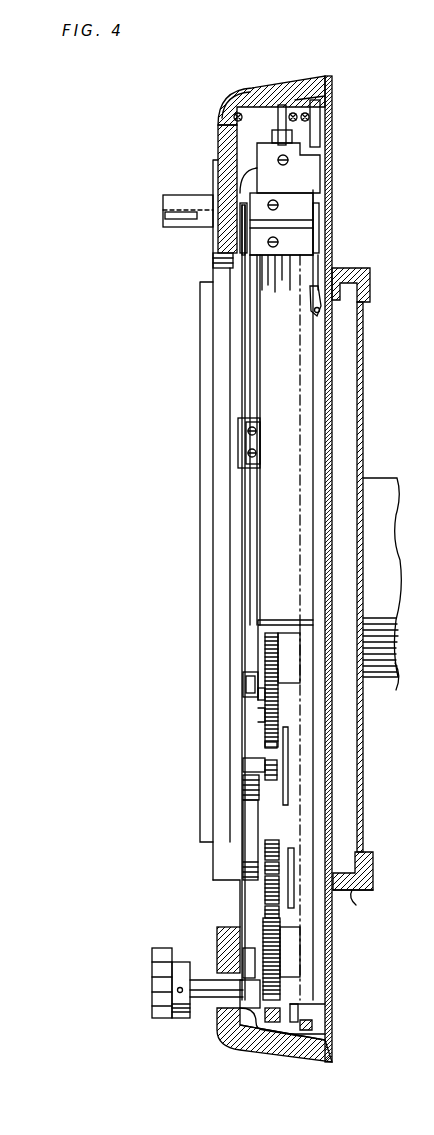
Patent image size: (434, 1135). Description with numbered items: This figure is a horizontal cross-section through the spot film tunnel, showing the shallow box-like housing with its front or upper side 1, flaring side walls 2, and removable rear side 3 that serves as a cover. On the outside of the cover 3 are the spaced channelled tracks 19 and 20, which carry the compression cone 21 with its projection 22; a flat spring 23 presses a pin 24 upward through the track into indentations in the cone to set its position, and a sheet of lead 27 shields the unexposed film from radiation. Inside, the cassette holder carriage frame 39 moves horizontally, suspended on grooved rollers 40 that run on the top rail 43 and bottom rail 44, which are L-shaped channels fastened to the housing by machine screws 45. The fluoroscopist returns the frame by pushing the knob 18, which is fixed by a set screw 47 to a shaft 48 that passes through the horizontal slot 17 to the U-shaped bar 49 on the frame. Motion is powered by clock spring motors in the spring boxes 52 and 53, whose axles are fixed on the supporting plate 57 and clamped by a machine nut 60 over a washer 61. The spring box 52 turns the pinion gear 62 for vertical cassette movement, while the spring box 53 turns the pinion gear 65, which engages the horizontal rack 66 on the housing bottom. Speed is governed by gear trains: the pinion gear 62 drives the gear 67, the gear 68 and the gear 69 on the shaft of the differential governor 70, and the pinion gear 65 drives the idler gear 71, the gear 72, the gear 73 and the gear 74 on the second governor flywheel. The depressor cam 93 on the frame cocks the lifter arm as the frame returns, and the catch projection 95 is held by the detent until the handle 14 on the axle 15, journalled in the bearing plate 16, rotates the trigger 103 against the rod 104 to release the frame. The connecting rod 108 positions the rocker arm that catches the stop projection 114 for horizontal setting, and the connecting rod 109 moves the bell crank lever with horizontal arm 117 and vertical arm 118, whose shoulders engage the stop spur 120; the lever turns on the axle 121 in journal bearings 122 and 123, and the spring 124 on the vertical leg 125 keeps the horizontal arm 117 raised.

The front or upper side 1 is at (222, 130).
The side walls 2 is at (273, 90).
The rear side 3 is at (333, 145).
The handle 14 is at (180, 195).
The rotatable axle 15 is at (175, 220).
The bearing plate 16 is at (216, 232).
The horizontal slot 17 is at (222, 1005).
The knob 18 is at (160, 997).
The channelled track 19 is at (358, 280).
The channelled track 20 is at (377, 889).
The compression cone 21 is at (363, 447).
The projection 22 is at (400, 668).
The flat spring 23 is at (357, 893).
The pin 24 is at (373, 868).
The sheet of lead 27 is at (318, 272).
The cassette holder carriage frame 39 is at (303, 397).
The rollers 40 is at (273, 136).
The top rail 43 is at (278, 123).
The bottom rail 44 is at (315, 1036).
The machine screws 45 is at (312, 1025).
The set screw 47 is at (176, 989).
The shaft 48 is at (213, 975).
The U-shaped bar 49 is at (254, 1030).
The spring box 52 is at (262, 716).
The spring box 53 is at (292, 942).
The supporting plate 57 is at (262, 803).
The machine nut 60 is at (245, 690).
The washer 61 is at (258, 698).
The pinion gear 62 is at (268, 648).
The pinion gear 65 is at (282, 972).
The horizontal rack 66 is at (268, 1040).
The gear 67 is at (300, 741).
The gear 68 is at (265, 745).
The gear 69 is at (263, 774).
The differential governor 70 is at (250, 763).
The idler gear 71 is at (270, 900).
The gear 72 is at (279, 878).
The gear 73 is at (279, 866).
The gear 74 is at (279, 843).
The depressor cam 93 is at (258, 372).
The catch projection 95 is at (255, 160).
The trigger 103 is at (233, 116).
The rod 104 is at (245, 96).
The connecting rod 108 is at (295, 112).
The connecting rod 109 is at (318, 110).
The stop projection 114 is at (320, 170).
The horizontal arm 117 is at (300, 200).
The vertical arm 118 is at (242, 505).
The stop spur 120 is at (250, 442).
The axle 121 is at (248, 215).
The journal bearing 122 is at (255, 228).
The journal bearing 123 is at (252, 243).
The spring 124 is at (321, 304).
The vertical leg 125 is at (313, 276).